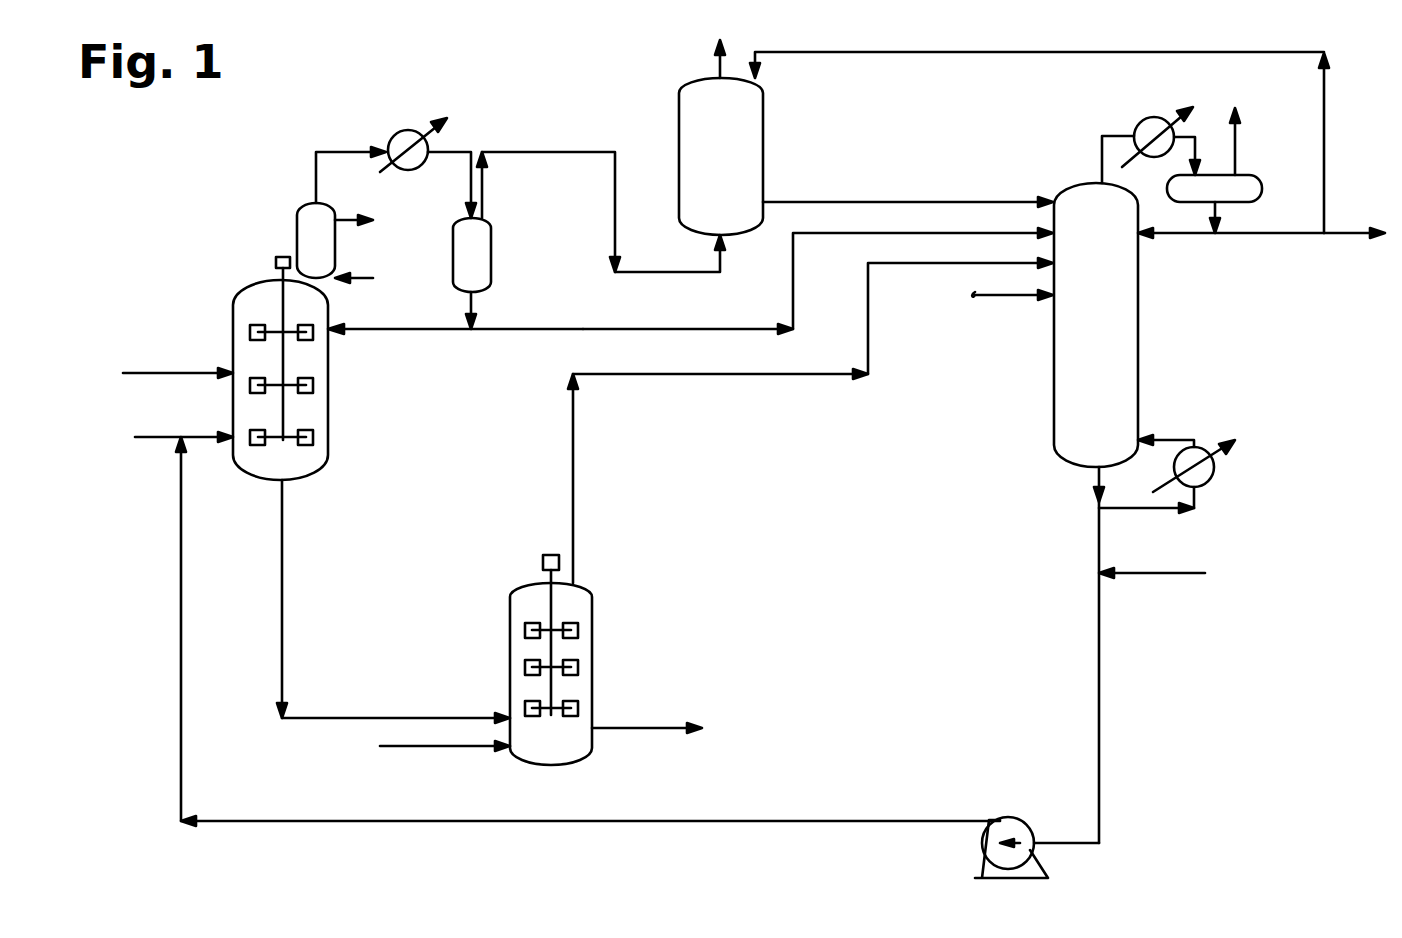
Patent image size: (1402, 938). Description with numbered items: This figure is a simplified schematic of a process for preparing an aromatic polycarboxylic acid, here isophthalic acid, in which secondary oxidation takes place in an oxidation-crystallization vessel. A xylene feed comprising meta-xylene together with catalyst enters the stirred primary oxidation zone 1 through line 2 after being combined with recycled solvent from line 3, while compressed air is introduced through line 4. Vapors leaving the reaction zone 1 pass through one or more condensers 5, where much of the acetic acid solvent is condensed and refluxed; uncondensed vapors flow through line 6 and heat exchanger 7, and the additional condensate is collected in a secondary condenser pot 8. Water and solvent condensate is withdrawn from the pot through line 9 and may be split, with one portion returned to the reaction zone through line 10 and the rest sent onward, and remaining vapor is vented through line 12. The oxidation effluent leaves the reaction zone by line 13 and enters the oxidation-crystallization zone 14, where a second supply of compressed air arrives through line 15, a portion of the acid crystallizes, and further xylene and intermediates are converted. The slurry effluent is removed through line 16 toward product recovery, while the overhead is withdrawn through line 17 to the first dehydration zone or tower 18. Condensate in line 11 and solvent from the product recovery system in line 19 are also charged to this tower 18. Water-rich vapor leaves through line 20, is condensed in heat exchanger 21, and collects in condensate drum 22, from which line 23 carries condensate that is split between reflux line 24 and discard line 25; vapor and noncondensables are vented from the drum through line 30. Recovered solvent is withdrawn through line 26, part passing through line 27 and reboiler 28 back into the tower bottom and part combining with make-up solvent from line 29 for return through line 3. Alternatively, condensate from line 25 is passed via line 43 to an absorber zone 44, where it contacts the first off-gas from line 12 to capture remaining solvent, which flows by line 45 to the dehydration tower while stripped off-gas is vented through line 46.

The primary oxidation zone 1 is at (232, 307).
The line 2 is at (190, 440).
The line 3 is at (181, 632).
The line 4 is at (163, 371).
The condensers 5 is at (312, 236).
The line 6 is at (335, 152).
The heat exchanger 7 is at (400, 130).
The secondary condenser pot 8 is at (492, 247).
The line 9 is at (478, 300).
The line 10 is at (375, 331).
The line 11 is at (583, 329).
The line 12 is at (485, 185).
The line 13 is at (283, 537).
The oxidation-crystallization zone 14 is at (592, 633).
The line 15 is at (443, 748).
The line 16 is at (658, 730).
The line 17 is at (573, 503).
The first dehydration zone 18 is at (1138, 380).
The line 19 is at (1008, 298).
The line 20 is at (1102, 155).
The heat exchanger 21 is at (1147, 128).
The condensate drum 22 is at (1263, 188).
The line 23 is at (1218, 208).
The line 24 is at (1193, 235).
The line 25 is at (1295, 235).
The line 26 is at (1095, 480).
The line 27 is at (1158, 512).
The reboiler 28 is at (1225, 478).
The line 29 is at (1175, 575).
The line 30 is at (1240, 143).
The line 43 is at (988, 52).
The absorber zone 44 is at (750, 125).
The line 45 is at (898, 202).
The line 46 is at (712, 73).